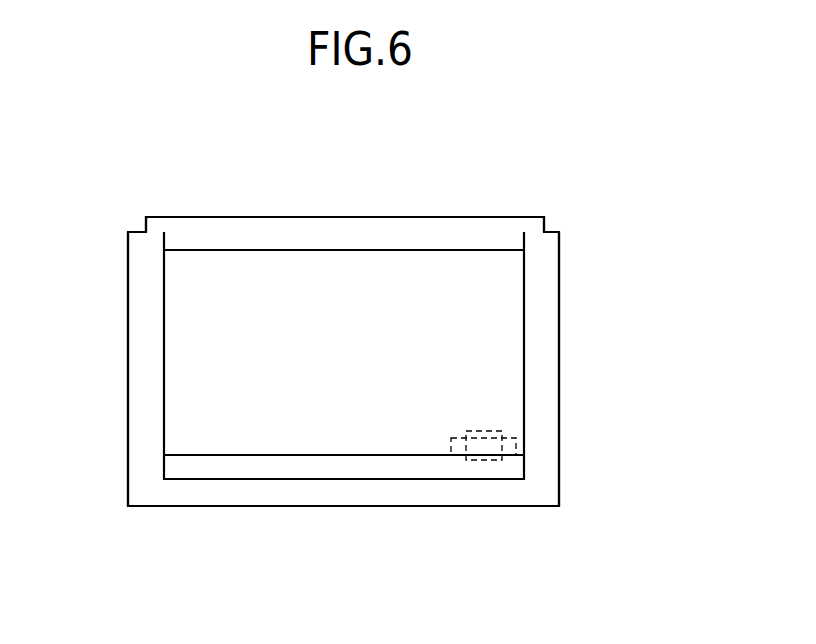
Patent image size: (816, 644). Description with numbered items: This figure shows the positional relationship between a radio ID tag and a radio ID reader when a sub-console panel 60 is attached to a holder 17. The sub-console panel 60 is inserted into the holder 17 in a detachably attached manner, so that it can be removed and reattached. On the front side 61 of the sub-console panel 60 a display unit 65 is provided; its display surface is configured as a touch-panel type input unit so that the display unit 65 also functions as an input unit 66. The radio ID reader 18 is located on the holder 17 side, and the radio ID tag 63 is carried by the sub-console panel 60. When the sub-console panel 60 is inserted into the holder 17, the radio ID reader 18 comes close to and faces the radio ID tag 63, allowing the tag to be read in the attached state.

The sub-console panel 60 is at (433, 203).
The front side 61 is at (234, 237).
The holder 17 is at (540, 322).
The radio ID reader 18 is at (493, 432).
The radio ID tag 63 is at (475, 462).
The display unit 65 is at (216, 416).
The input unit 66 is at (344, 352).